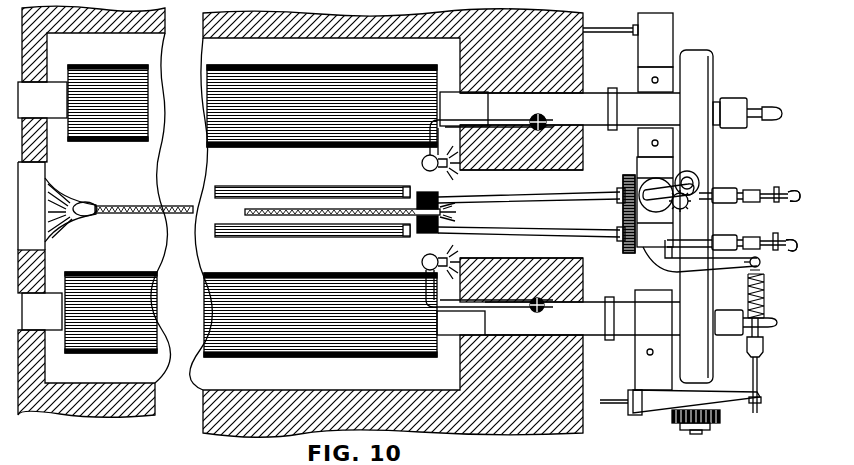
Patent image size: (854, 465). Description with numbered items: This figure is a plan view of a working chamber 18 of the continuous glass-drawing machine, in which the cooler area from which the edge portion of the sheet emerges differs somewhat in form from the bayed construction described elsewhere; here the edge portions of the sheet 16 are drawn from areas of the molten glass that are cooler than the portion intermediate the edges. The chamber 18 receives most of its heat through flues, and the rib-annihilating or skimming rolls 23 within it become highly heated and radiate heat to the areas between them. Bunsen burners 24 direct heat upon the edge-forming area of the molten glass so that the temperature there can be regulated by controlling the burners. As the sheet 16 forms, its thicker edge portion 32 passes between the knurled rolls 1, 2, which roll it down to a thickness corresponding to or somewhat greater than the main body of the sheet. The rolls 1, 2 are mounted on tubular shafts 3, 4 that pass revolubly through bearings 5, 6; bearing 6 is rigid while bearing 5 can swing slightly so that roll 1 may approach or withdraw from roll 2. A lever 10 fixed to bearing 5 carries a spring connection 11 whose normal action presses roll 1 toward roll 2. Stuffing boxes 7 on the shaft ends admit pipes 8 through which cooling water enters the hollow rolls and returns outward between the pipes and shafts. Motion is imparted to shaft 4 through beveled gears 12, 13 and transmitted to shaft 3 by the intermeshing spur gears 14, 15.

The roll 1 is at (452, 194).
The roll 2 is at (452, 236).
The tubular shaft 3 is at (505, 197).
The tubular shaft 4 is at (505, 233).
The bearing 5 is at (641, 253).
The bearing 6 is at (644, 178).
The stuffing box 7 is at (724, 203).
The pipe 8 is at (781, 197).
The lever 10 is at (710, 271).
The spring connection 11 is at (767, 290).
The beveled gear 12 is at (705, 178).
The beveled gear 13 is at (678, 208).
The spur gear 14 is at (624, 236).
The spur gear 15 is at (622, 190).
The sheet 16 is at (162, 206).
The working chamber 18 is at (103, 211).
The skimming roll 23 is at (150, 88).
The Bunsen burner 24 is at (424, 166).
The thicker edge portion 32 is at (82, 230).